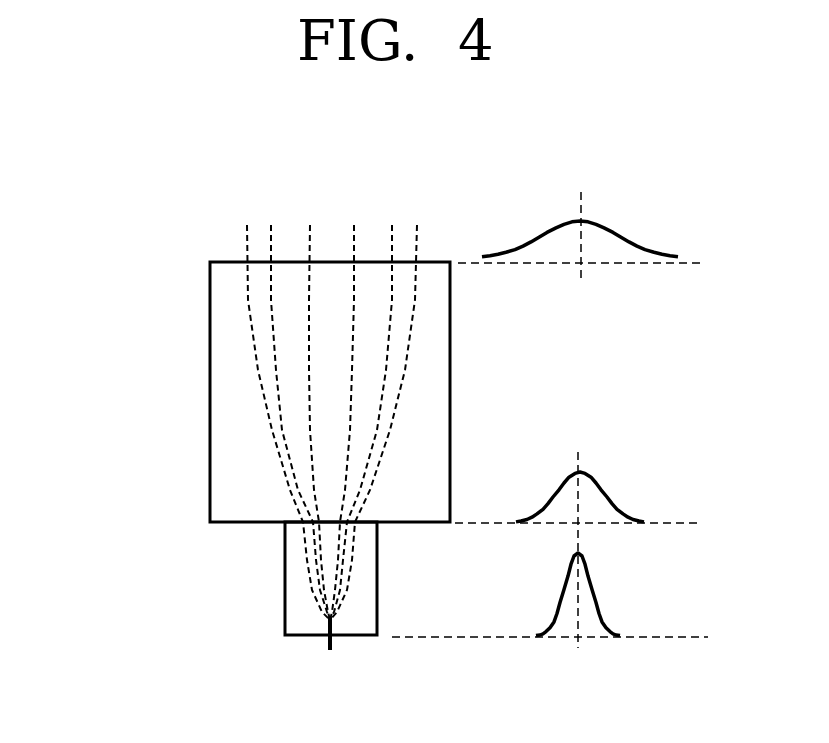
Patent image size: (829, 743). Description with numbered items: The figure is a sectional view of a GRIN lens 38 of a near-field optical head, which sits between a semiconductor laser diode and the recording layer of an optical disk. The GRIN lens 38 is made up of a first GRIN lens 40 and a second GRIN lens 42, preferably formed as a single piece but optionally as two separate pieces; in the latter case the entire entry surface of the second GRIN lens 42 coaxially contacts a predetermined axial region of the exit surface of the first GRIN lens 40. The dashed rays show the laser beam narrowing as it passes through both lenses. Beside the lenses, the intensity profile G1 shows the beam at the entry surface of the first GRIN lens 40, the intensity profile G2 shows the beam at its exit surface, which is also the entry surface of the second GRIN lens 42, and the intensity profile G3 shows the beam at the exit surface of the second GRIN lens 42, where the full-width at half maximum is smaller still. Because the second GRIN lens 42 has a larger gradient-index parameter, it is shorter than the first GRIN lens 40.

The GRIN lens 38 is at (115, 435).
The first GRIN lens 40 is at (212, 452).
The second GRIN lens 42 is at (285, 602).
The intensity profile at entry surface of first GRIN lens G1 is at (630, 240).
The intensity profile at exit surface of first GRIN lens G2 is at (607, 497).
The intensity profile at exit surface of second GRIN lens G3 is at (597, 600).